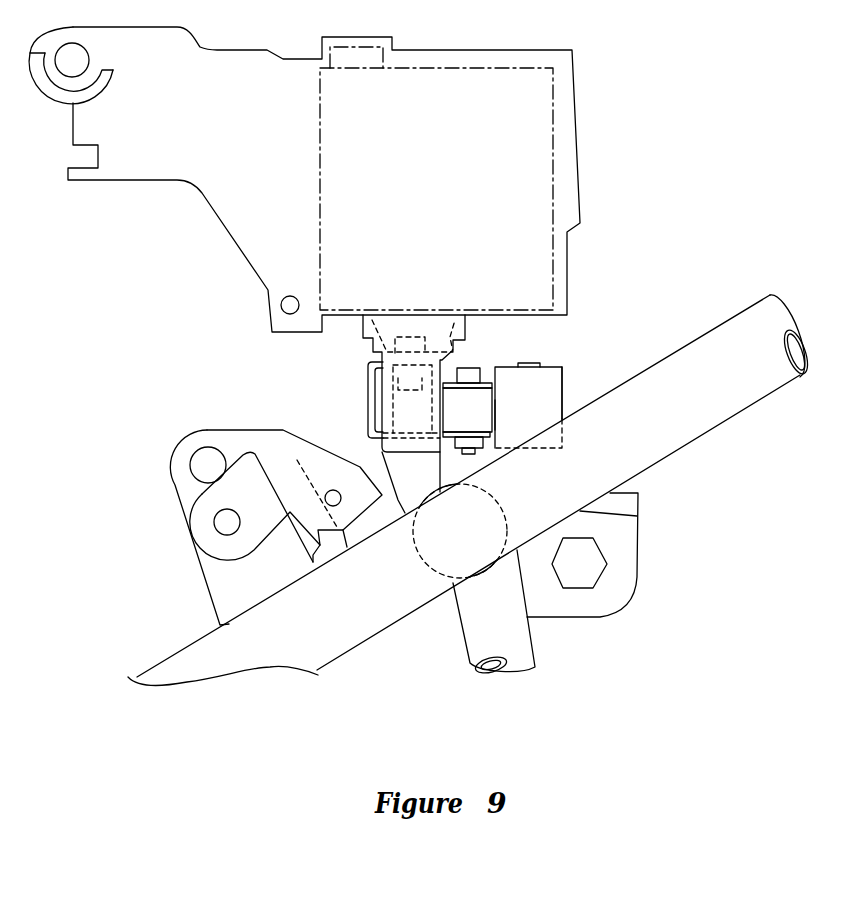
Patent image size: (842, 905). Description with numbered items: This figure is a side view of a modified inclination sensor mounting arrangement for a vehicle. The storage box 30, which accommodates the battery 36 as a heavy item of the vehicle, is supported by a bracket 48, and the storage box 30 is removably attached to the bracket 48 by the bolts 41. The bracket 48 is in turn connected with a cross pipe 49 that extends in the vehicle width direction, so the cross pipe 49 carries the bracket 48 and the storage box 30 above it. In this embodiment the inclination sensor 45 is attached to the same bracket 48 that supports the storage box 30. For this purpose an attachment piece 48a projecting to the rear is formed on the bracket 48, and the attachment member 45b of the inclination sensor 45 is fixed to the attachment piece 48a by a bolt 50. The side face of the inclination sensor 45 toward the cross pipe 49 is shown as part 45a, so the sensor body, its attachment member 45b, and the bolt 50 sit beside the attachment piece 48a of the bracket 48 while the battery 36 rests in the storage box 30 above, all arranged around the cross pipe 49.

The storage box 30 is at (575, 74).
The battery 36 is at (555, 163).
The bolt 41 is at (400, 365).
The inclination sensor 45 is at (568, 383).
The clamp block side face 45a is at (563, 400).
The attachment member 45b is at (487, 400).
The bracket 48 is at (367, 392).
The attachment piece 48a is at (473, 428).
The cross pipe 49 is at (502, 510).
The bolt 50 is at (468, 370).